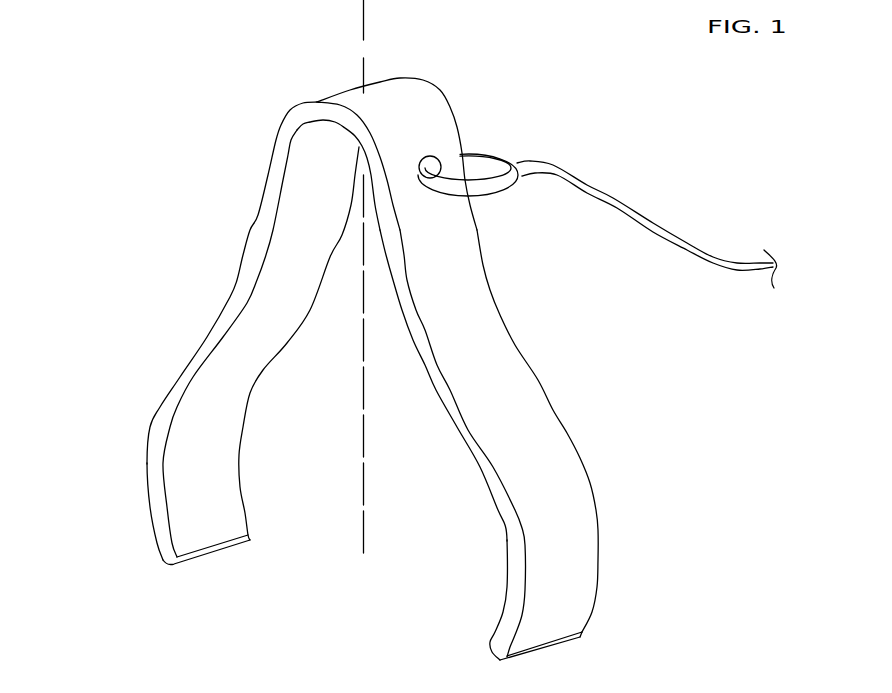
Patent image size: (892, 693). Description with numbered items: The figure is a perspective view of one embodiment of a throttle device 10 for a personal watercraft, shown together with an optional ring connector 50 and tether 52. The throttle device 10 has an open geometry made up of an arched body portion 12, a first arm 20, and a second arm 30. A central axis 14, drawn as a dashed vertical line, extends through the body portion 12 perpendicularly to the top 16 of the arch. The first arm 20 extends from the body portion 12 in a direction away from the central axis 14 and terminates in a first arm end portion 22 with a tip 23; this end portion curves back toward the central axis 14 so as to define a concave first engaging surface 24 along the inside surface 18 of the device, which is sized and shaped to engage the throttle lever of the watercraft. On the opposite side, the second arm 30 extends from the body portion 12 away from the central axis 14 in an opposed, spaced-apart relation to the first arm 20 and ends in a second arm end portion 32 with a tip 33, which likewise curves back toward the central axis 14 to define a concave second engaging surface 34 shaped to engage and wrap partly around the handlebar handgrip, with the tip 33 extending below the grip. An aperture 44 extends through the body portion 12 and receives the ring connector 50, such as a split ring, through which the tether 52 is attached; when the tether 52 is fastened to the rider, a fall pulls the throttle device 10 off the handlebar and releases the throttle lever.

The throttle device 10 is at (143, 138).
The arched body portion 12 is at (283, 137).
The central axis 14 is at (362, 52).
The top 16 is at (378, 89).
The inside surface 18 is at (320, 262).
The first arm 20 is at (517, 388).
The first arm end portion 22 is at (569, 529).
The tip 23 is at (540, 652).
The first engaging surface 24 is at (504, 552).
The second arm 30 is at (237, 294).
The second arm end portion 32 is at (157, 462).
The tip 33 is at (205, 552).
The second engaging surface 34 is at (206, 452).
The aperture 44 is at (440, 156).
The ring connector 50 is at (497, 190).
The tether 52 is at (612, 197).